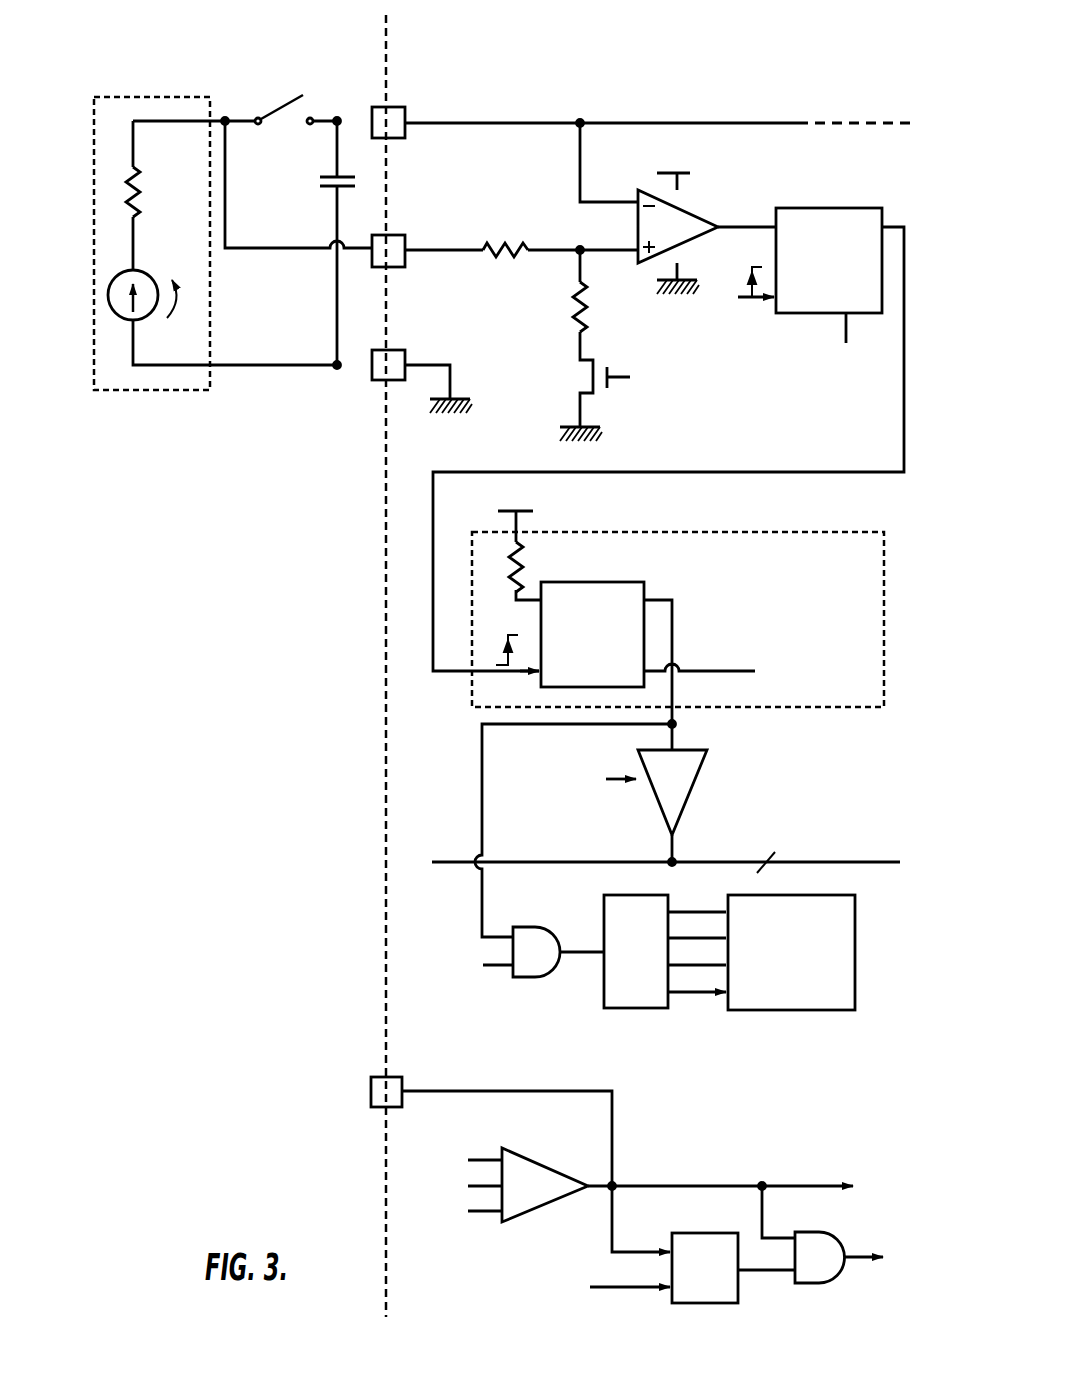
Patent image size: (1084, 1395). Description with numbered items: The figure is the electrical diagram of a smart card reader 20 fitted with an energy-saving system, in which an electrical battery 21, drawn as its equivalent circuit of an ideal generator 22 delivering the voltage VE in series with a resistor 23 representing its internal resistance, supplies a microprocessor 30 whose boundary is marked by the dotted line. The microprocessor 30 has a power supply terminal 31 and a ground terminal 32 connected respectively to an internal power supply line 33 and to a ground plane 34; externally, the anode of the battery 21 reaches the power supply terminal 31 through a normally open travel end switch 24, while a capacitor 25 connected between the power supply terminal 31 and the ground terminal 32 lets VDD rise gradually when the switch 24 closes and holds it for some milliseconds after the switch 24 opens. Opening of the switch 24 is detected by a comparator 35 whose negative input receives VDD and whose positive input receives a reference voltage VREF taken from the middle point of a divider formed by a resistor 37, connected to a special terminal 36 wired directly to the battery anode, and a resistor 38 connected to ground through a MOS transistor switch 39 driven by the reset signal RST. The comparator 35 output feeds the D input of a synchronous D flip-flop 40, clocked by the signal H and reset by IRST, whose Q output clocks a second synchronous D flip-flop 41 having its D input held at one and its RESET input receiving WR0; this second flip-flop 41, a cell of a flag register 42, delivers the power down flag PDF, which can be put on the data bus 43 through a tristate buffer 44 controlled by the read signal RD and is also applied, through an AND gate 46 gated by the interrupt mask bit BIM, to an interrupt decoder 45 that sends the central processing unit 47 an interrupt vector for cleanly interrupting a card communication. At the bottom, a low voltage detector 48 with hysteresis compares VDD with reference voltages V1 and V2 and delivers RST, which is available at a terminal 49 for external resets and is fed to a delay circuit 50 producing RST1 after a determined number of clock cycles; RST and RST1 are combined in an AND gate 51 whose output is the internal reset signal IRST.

The smart card reader 20 is at (200, 726).
The electrical battery 21 is at (178, 97).
The ideal generator 22 is at (150, 318).
The resistor 23 is at (150, 188).
The travel end switch 24 is at (303, 95).
The capacitor 25 is at (328, 187).
The microprocessor 30 is at (387, 642).
The power supply terminal 31 is at (377, 107).
The ground terminal 32 is at (380, 383).
The internal power supply line 33 is at (520, 121).
The ground plane 34 is at (461, 398).
The comparator 35 is at (702, 212).
The special terminal 36 is at (390, 267).
The resistor 37 is at (505, 244).
The resistor 38 is at (578, 300).
The switch 39 is at (592, 371).
The synchronous D flip-flop 40 is at (820, 208).
The second synchronous D flip-flop 41 is at (615, 582).
The flag register 42 is at (830, 708).
The data bus 43 is at (800, 860).
The tristate buffer 44 is at (702, 772).
The interrupt decoder 45 is at (632, 1010).
The AND gate 46 is at (538, 976).
The central processing unit 47 is at (832, 1012).
The low voltage detector 48 is at (520, 1222).
The terminal 49 is at (371, 1092).
The delay circuit 50 is at (727, 1304).
The AND gate 51 is at (822, 1283).